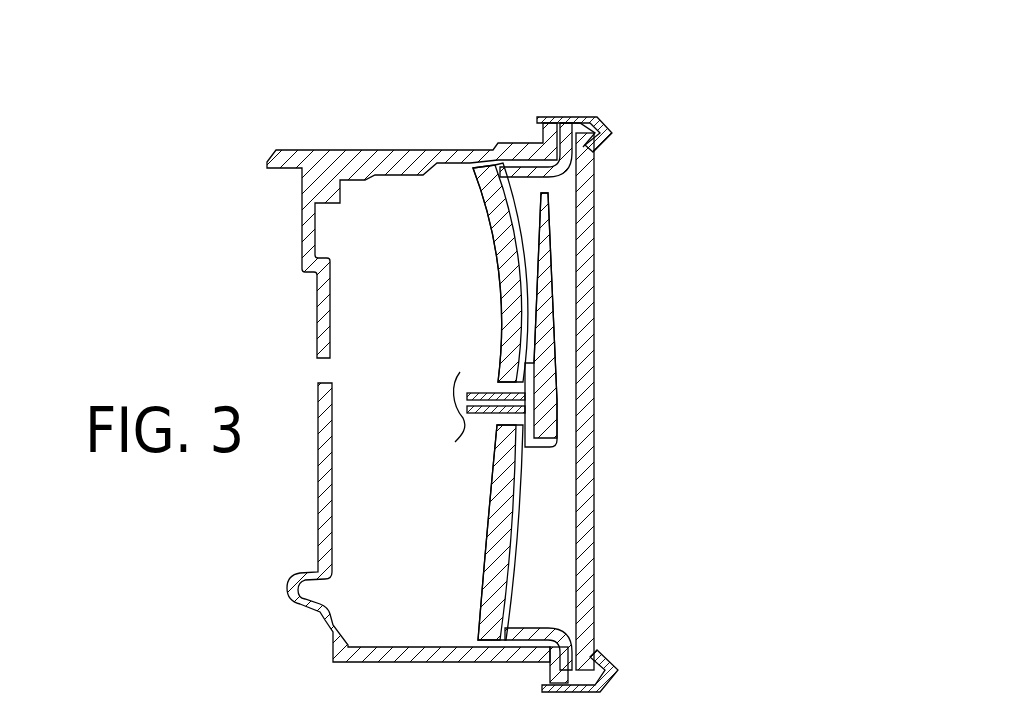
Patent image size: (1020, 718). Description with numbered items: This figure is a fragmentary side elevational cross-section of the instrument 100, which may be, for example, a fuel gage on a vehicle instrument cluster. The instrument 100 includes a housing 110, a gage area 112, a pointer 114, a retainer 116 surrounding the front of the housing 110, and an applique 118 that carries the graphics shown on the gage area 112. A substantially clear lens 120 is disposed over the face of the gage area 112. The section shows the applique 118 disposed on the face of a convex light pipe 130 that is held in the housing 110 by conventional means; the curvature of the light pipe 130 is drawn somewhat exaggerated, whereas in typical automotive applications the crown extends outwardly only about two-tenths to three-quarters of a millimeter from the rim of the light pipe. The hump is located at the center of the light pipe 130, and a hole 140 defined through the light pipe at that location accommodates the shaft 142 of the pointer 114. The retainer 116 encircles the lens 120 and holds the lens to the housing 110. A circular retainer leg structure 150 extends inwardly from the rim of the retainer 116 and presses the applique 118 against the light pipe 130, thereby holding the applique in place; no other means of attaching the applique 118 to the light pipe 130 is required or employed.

The instrument 100 is at (463, 76).
The housing 110 is at (355, 162).
The gage area 112 is at (513, 557).
The pointer 114 is at (545, 313).
The retainer 116 is at (578, 118).
The applique 118 is at (518, 503).
The lens 120 is at (590, 407).
The light pipe 130 is at (497, 258).
The hole 140 is at (488, 423).
The shaft 142 is at (488, 395).
The retainer leg structure 150 is at (553, 180).